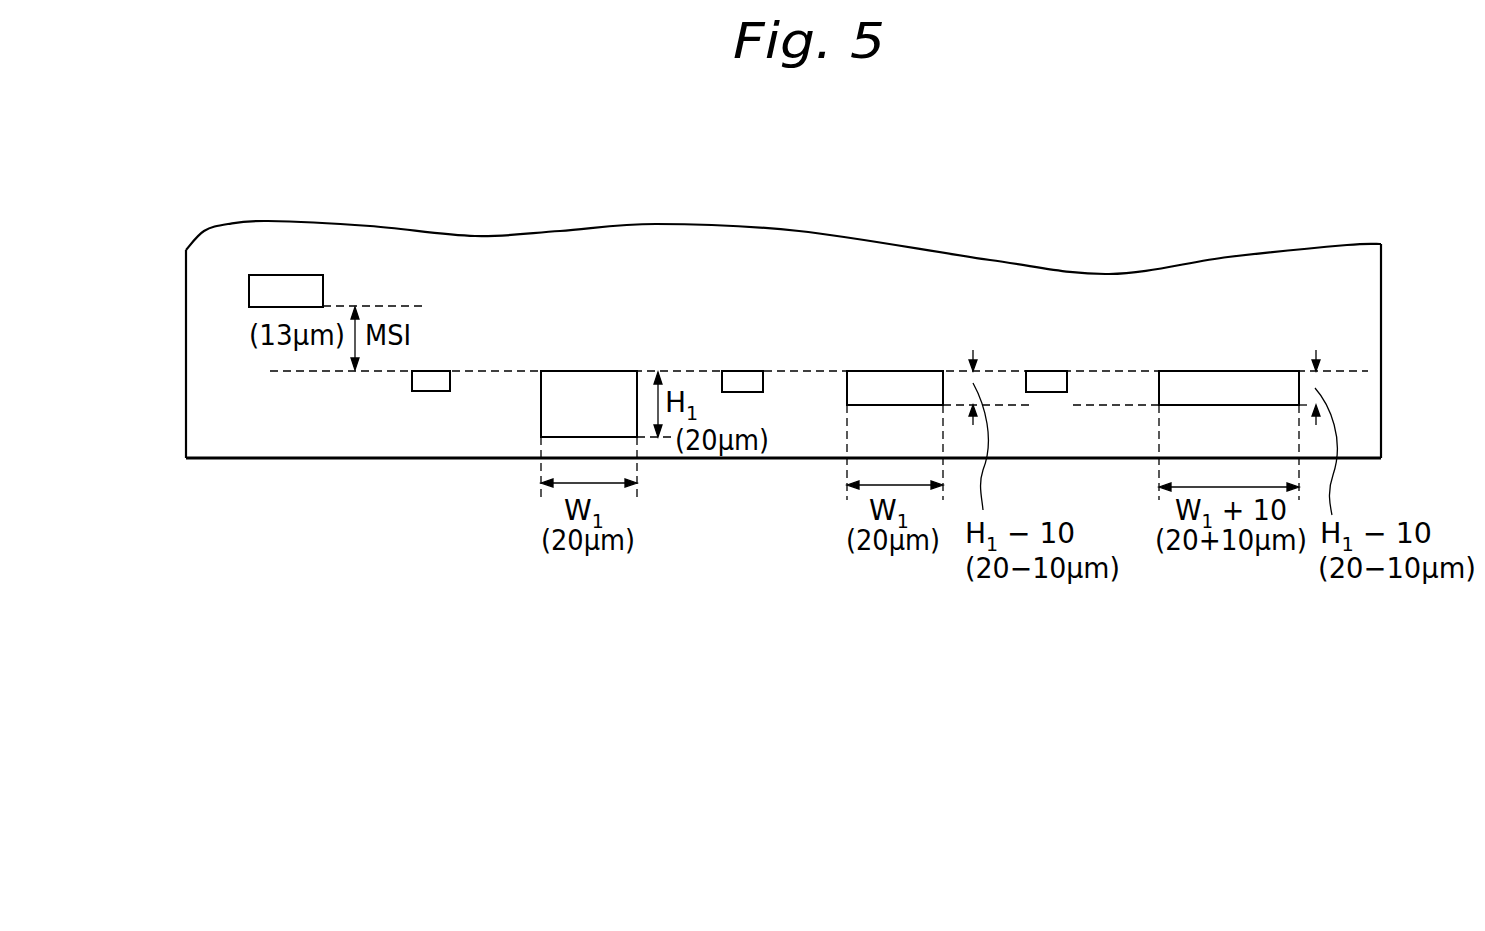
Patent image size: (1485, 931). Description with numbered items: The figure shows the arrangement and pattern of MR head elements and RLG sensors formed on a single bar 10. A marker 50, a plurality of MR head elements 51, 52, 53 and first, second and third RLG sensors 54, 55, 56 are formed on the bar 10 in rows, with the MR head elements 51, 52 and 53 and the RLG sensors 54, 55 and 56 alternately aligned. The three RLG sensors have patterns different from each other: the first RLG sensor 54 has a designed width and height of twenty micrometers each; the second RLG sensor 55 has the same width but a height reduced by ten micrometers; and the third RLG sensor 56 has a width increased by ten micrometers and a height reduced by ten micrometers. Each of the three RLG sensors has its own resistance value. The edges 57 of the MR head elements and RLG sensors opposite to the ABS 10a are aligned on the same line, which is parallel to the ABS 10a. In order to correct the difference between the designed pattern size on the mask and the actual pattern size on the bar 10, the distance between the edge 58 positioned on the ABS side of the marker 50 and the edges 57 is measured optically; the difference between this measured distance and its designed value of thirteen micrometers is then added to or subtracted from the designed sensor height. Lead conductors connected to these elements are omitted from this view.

The bar 10 is at (215, 438).
The ABS 10a is at (278, 468).
The marker 50 is at (298, 288).
The MR head element 51 is at (440, 371).
The MR head element 52 is at (742, 371).
The MR head element 53 is at (1050, 371).
The first RLG sensor 54 is at (597, 371).
The second RLG sensor 55 is at (908, 371).
The third RLG sensor 56 is at (1245, 371).
The edges 57 is at (310, 374).
The edge 58 is at (395, 304).